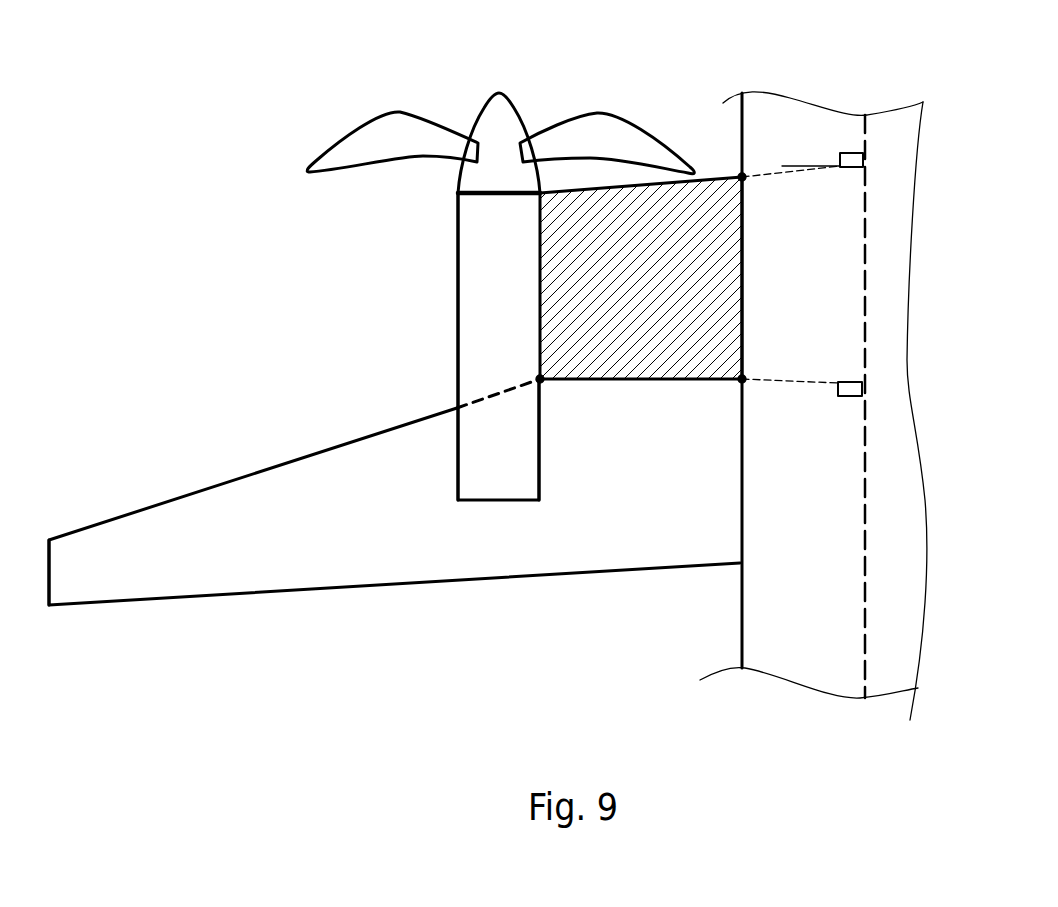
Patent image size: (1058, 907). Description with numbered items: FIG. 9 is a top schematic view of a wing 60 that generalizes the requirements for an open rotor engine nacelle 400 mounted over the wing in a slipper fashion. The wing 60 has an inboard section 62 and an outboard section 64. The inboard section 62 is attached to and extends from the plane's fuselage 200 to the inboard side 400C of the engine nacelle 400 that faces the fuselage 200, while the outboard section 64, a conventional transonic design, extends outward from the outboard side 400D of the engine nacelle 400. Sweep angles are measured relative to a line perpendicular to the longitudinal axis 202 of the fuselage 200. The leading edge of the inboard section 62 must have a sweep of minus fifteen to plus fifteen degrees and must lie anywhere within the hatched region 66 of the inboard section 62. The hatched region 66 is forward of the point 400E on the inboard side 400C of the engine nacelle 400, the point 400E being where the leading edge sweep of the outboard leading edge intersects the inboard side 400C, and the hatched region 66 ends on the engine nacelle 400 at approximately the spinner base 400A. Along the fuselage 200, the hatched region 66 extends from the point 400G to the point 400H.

The wing 60 is at (553, 408).
The inboard section 62 is at (394, 519).
The outboard section 64 is at (120, 599).
The hatched region 66 is at (637, 360).
The fuselage 200 is at (775, 415).
The longitudinal axis 202 is at (791, 426).
The engine nacelle 400 is at (500, 296).
The spinner base 400A is at (438, 224).
The inboard side 400C is at (600, 439).
The outboard side 400D is at (391, 346).
The point 400E is at (598, 409).
The point 400G is at (800, 404).
The point 400H is at (806, 111).